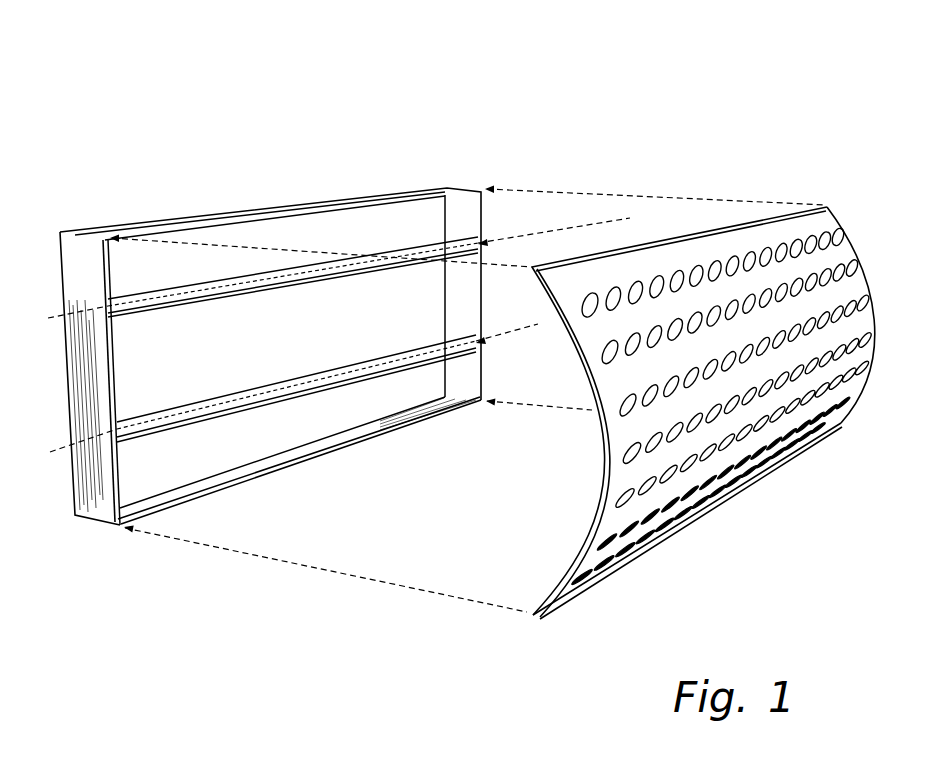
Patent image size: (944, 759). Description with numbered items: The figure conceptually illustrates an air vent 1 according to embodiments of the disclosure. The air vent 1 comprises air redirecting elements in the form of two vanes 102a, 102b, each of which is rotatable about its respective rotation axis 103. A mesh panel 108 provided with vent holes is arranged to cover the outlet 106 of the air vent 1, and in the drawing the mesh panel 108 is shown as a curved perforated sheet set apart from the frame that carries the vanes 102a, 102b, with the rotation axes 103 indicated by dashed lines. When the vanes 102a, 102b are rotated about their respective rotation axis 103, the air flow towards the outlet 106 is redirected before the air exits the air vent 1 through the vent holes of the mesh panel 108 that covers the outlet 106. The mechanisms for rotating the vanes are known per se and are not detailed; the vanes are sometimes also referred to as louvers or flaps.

The air vent 1 is at (527, 108).
The rotation axis 103 is at (527, 237).
The vane 102a is at (212, 283).
The vane 102b is at (370, 363).
The outlet 106 is at (177, 370).
The mesh panel 108 is at (712, 248).